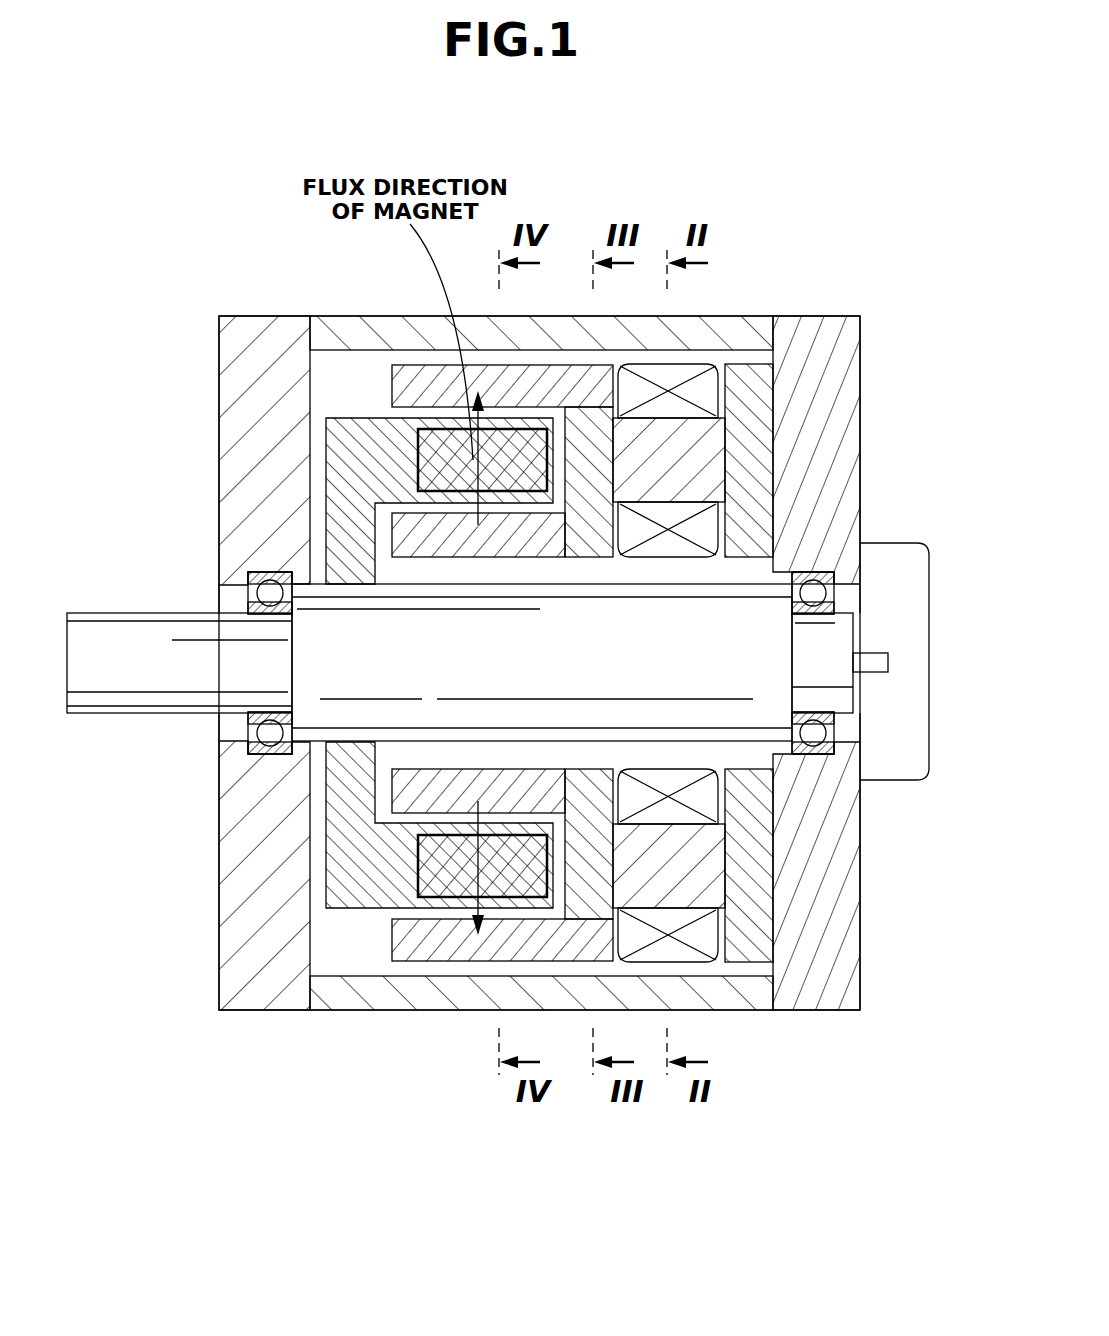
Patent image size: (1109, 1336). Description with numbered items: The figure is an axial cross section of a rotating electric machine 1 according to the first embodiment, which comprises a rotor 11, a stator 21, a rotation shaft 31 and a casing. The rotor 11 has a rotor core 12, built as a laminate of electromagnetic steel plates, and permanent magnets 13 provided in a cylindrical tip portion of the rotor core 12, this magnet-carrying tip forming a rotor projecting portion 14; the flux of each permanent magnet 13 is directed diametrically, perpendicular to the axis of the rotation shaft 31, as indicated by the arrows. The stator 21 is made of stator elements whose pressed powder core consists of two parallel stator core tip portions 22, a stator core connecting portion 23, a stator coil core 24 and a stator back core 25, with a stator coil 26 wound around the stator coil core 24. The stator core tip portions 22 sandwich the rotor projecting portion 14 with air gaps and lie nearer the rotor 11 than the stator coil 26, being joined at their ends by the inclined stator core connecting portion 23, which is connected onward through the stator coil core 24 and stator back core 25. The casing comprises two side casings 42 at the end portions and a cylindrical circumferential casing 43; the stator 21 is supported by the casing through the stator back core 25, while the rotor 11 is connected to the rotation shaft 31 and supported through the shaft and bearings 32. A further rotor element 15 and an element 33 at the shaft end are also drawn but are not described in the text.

The rotating electric machine 1 is at (896, 519).
The rotor 11 is at (466, 604).
The rotor core 12 is at (352, 504).
The permanent magnet 13 is at (430, 447).
The rotor projecting portion 14 is at (402, 871).
The permanent magnet 15 is at (430, 510).
The stator 21 is at (747, 604).
The stator core tip portion 22 is at (455, 540).
The stator core connecting portion 23 is at (576, 430).
The stator coil core 24 is at (712, 443).
The stator back core 25 is at (745, 450).
The stator coil 26 is at (692, 386).
The rotation shaft 31 is at (124, 634).
The bearing 32 is at (813, 737).
The cover 33 is at (913, 752).
The side casing 42 is at (265, 816).
The circumferential casing 43 is at (356, 336).